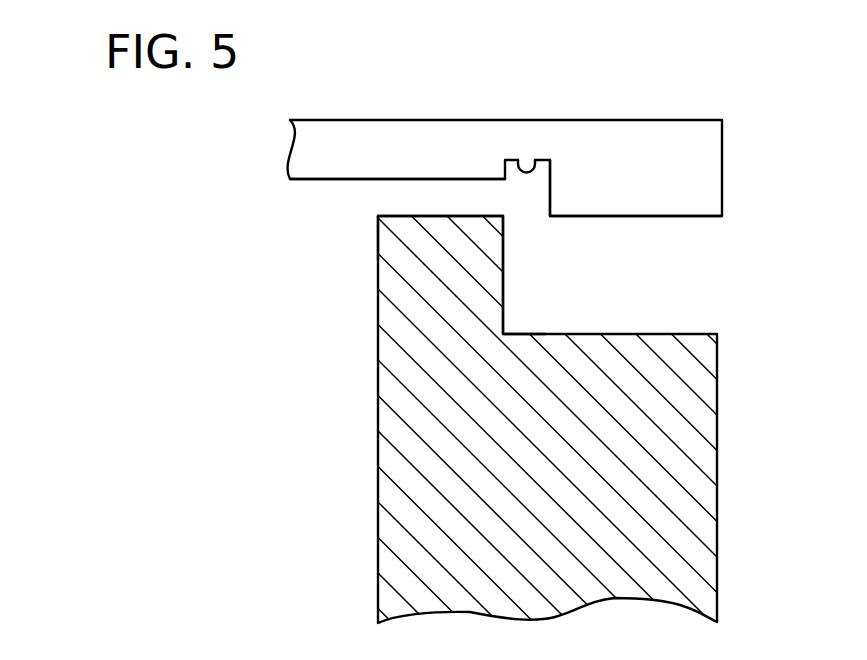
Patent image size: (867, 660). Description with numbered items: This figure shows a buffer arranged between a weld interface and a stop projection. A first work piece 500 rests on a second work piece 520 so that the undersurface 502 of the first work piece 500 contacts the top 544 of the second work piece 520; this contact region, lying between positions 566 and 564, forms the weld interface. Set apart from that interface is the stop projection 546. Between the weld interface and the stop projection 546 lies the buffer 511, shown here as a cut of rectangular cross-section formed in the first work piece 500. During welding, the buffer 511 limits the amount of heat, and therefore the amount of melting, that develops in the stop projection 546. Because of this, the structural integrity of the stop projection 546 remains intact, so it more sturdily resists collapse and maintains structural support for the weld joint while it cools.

The first work piece 500 is at (357, 120).
The undersurface 502 is at (342, 179).
The buffer 511 is at (536, 160).
The stop projection 546 is at (647, 207).
The second work piece 520 is at (378, 380).
The top 544 is at (437, 216).
The position 566 is at (379, 216).
The position 564 is at (503, 216).